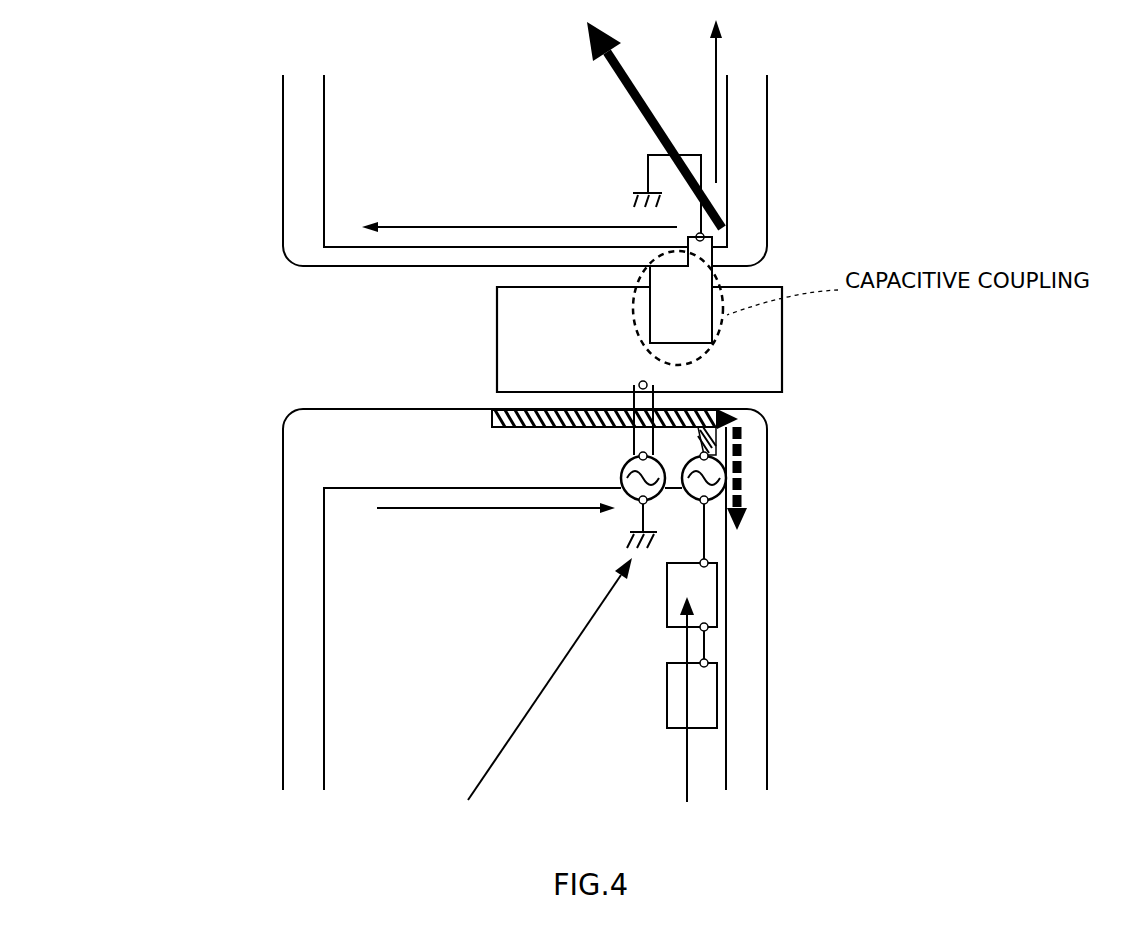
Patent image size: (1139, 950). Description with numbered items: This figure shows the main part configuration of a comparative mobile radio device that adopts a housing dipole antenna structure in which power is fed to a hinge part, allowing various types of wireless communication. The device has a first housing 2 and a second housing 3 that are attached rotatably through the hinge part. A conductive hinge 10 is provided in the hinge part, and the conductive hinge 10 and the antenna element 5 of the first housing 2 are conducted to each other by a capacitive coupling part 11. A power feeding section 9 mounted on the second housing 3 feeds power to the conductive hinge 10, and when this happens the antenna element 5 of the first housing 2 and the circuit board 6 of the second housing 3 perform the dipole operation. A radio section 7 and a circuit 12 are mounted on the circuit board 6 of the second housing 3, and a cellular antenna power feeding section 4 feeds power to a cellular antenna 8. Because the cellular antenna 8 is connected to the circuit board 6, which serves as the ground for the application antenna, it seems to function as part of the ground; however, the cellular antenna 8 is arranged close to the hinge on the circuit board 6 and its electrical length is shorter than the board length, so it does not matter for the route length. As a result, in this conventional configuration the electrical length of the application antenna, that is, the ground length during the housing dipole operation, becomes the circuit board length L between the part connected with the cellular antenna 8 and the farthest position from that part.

The first housing 2 is at (688, 157).
The antenna element 5 is at (727, 168).
The capacitive coupling part 11 is at (695, 289).
The conductive hinge 10 is at (770, 355).
The cellular antenna 8 is at (710, 446).
The cellular antenna power feeding section 4 is at (725, 473).
The power feeding section 9 is at (622, 466).
The radio section 7 is at (707, 603).
The circuit 12 is at (707, 708).
The second housing 3 is at (767, 767).
The circuit board 6 is at (325, 658).
The circuit board length L is at (640, 90).